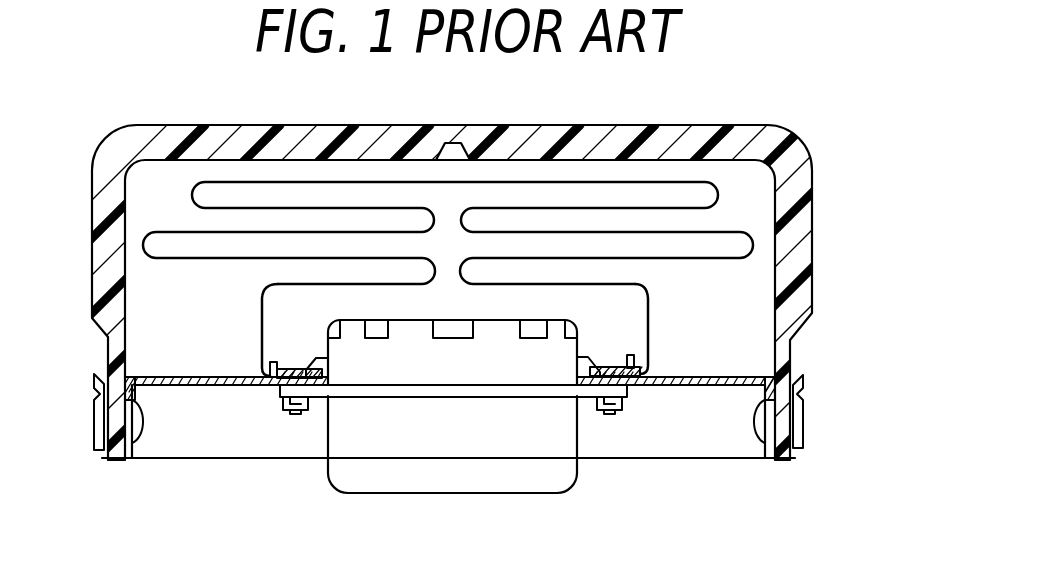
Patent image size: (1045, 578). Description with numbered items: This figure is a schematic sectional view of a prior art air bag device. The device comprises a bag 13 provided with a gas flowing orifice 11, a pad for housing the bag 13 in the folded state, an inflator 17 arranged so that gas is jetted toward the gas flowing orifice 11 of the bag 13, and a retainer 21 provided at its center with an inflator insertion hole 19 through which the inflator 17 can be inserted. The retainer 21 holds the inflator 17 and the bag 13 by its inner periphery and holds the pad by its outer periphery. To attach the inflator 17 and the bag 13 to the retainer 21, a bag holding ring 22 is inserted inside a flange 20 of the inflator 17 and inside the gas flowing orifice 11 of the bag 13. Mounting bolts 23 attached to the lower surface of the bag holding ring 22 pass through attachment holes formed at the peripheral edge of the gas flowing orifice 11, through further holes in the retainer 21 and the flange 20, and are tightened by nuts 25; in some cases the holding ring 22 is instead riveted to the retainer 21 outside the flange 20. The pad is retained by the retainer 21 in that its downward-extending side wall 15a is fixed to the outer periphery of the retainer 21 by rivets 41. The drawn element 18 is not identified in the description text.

The gas flowing orifice 11 is at (320, 362).
The bag 13 is at (332, 182).
The side wall 15a is at (783, 360).
The inflator 17 is at (452, 432).
The connector body 18 is at (467, 467).
The inflator insertion hole 19 is at (587, 390).
The flange 20 is at (527, 390).
The retainer 21 is at (187, 387).
The bag holding ring 22 is at (615, 368).
The mounting bolts 23 is at (612, 410).
The nuts 25 is at (627, 402).
The rivets 41 is at (790, 435).